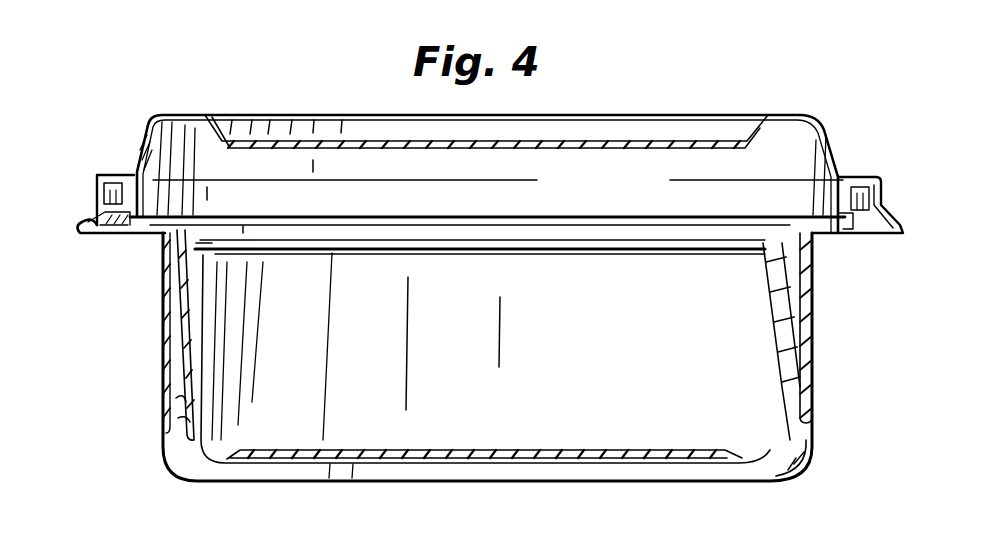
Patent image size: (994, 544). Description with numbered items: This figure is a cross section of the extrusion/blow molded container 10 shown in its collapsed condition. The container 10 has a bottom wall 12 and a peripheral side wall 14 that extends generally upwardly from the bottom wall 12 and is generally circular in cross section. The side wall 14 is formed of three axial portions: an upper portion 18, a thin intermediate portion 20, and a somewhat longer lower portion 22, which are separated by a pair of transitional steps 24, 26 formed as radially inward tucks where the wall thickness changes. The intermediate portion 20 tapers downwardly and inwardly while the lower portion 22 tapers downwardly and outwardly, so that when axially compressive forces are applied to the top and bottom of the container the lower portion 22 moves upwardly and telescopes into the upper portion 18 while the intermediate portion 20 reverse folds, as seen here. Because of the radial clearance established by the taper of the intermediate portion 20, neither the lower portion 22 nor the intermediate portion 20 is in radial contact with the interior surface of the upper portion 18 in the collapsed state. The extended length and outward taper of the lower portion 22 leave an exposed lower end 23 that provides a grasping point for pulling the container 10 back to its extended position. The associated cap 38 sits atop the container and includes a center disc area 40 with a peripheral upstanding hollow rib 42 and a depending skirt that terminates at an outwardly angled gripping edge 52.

The container 10 is at (735, 95).
The bottom wall 12 is at (400, 462).
The peripheral side wall 14 is at (820, 325).
The upper portion 18 is at (163, 283).
The intermediate portion 20 is at (178, 306).
The lower portion 22 is at (176, 398).
The lower end 23 is at (806, 455).
The transitional step 24 is at (178, 418).
The transitional step 26 is at (200, 242).
The cap 38 is at (608, 125).
The center disc area 40 is at (300, 133).
The upstanding hollow rib 42 is at (186, 115).
The gripping edge 52 is at (86, 210).